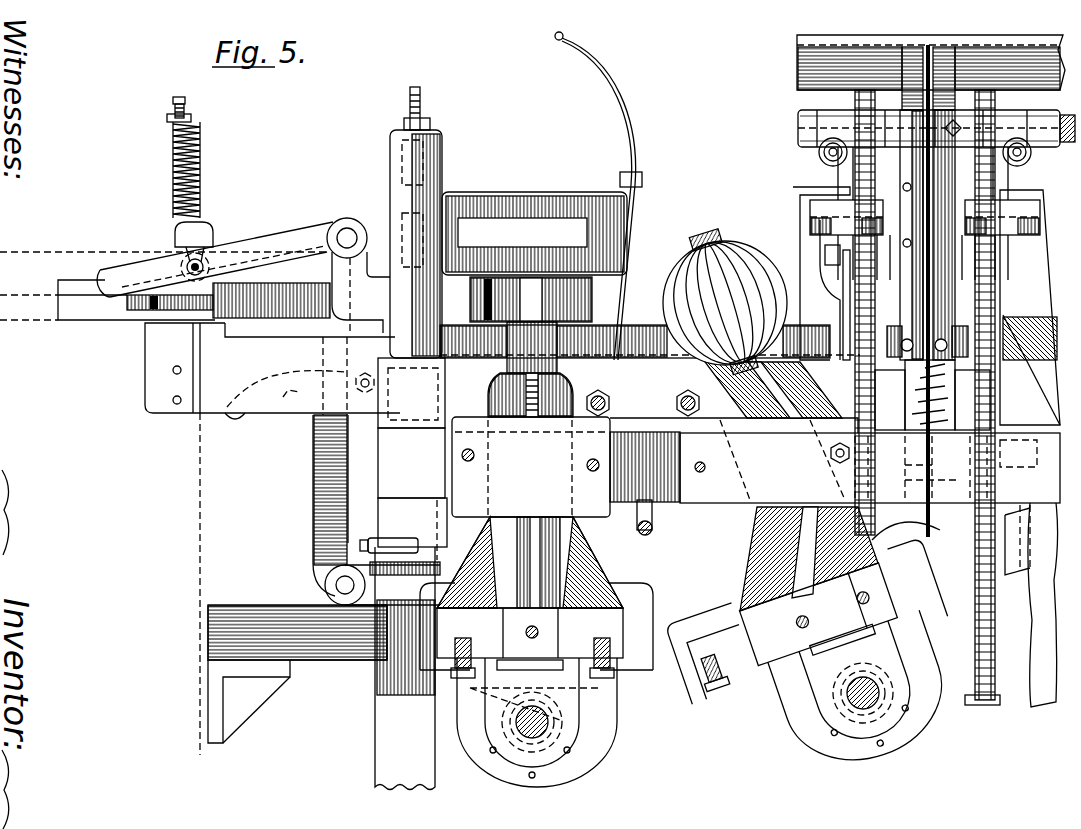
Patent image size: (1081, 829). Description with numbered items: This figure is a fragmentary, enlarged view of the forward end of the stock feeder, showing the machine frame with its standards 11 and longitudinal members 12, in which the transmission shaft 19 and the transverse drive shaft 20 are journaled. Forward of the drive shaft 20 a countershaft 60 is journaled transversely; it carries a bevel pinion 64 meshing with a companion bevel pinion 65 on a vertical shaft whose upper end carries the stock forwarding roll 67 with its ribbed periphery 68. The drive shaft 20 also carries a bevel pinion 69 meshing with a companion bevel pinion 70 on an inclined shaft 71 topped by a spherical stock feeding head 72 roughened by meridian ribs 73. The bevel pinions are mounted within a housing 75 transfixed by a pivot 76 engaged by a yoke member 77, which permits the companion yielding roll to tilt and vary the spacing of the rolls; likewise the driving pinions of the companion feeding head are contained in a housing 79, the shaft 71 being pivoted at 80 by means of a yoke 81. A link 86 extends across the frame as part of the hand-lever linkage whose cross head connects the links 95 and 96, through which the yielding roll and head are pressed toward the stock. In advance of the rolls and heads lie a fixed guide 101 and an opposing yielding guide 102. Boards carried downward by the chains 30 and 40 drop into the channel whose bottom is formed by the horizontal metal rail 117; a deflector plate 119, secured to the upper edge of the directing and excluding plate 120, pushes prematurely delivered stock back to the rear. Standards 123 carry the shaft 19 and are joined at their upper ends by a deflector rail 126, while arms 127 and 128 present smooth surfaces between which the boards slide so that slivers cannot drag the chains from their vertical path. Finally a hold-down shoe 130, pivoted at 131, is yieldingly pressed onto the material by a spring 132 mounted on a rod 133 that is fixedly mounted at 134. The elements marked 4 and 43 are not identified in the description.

The chain 4 is at (870, 95).
The standards 11 is at (388, 718).
The longitudinal members 12 is at (934, 468).
The transmission shaft 19 is at (798, 128).
The drive shaft 20 is at (860, 712).
The chain 30 is at (980, 700).
The chain 40 is at (990, 108).
The sprocket 43 is at (862, 205).
The countershaft 60 is at (545, 732).
The bevel pinion 64 is at (578, 720).
The companion bevel pinion 65 is at (470, 690).
The stock forwarding roll 67 is at (595, 305).
The roughened periphery 68 is at (486, 310).
The bevel pinion 69 is at (820, 712).
The companion bevel pinion 70 is at (800, 690).
The shaft 71 is at (712, 234).
The spherical stock feeding head 72 is at (744, 258).
The meridian ribs 73 is at (762, 262).
The housing 75 is at (630, 573).
The pivot 76 is at (655, 640).
The yoke member 77 is at (648, 605).
The housing 79 is at (760, 565).
The pivot 80 is at (716, 665).
The yoke 81 is at (722, 592).
The link 86 is at (655, 528).
The link 95 is at (611, 403).
The link 96 is at (688, 396).
The fixed guide 101 is at (238, 302).
The yielding guide 102 is at (73, 292).
The metal rail 117 is at (640, 340).
The deflector plate 119 is at (620, 98).
The directing and excluding plate 120 is at (630, 220).
The standards 123 is at (935, 265).
The deflector rail 126 is at (810, 65).
The arm 127 is at (1000, 292).
The arm 128 is at (830, 248).
The hold-down shoe 130 is at (276, 240).
The pivot 131 is at (347, 235).
The spring 132 is at (201, 163).
The rod 133 is at (188, 104).
The fixed mounting 134 is at (201, 262).